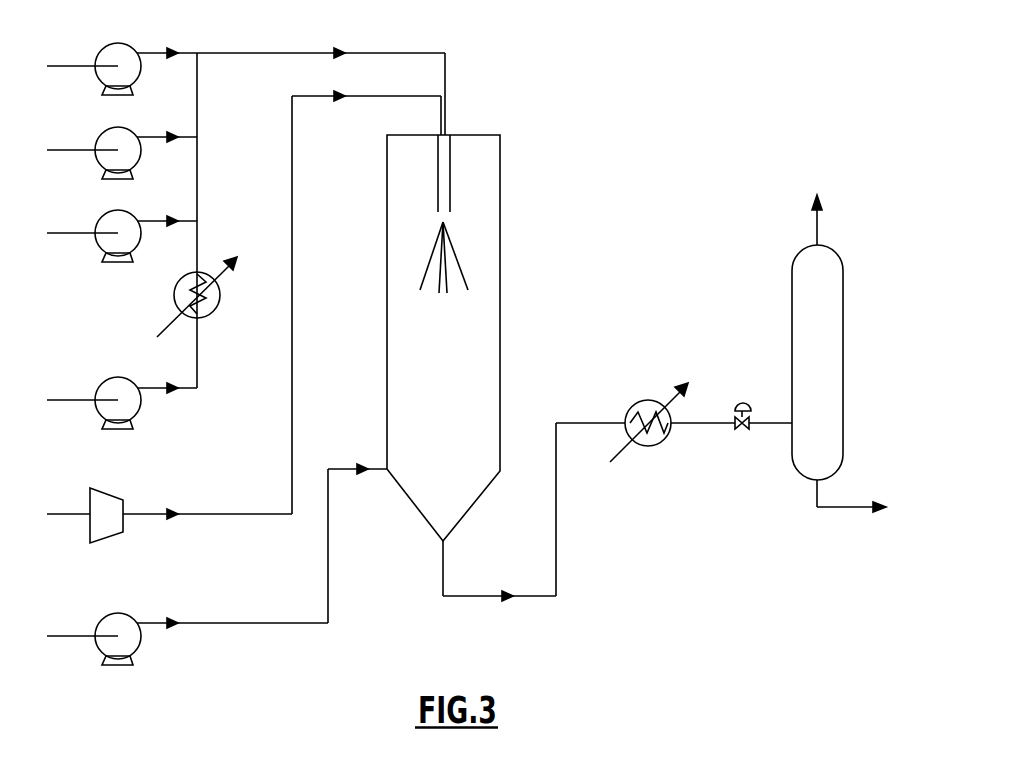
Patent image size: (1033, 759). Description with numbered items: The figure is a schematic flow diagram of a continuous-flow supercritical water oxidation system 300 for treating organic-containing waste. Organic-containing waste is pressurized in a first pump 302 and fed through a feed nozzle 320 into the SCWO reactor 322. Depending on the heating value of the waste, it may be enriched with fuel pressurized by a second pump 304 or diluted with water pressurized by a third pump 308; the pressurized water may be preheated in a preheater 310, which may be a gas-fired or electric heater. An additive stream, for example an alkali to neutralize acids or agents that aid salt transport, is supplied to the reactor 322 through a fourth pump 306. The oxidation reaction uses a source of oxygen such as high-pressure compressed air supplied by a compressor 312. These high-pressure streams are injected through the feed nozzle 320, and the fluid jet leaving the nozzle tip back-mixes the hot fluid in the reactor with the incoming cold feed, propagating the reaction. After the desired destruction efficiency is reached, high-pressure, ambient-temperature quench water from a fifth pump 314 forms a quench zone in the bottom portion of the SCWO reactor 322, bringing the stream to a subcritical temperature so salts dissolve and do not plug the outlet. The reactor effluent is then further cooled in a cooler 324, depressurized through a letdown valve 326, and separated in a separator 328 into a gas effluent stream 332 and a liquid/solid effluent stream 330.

The SCWO system 300 is at (712, 65).
The first pump 302 is at (99, 84).
The second pump 304 is at (99, 168).
The fourth pump 306 is at (99, 251).
The third pump 308 is at (138, 412).
The preheater 310 is at (213, 313).
The compressor 312 is at (108, 540).
The fifth pump 314 is at (138, 648).
The feed nozzle 320 is at (470, 152).
The SCWO reactor 322 is at (500, 280).
The cooler 324 is at (666, 440).
The letdown valve 326 is at (742, 402).
The separator 328 is at (792, 300).
The liquid/solid effluent stream 330 is at (874, 502).
The gas effluent stream 332 is at (817, 205).